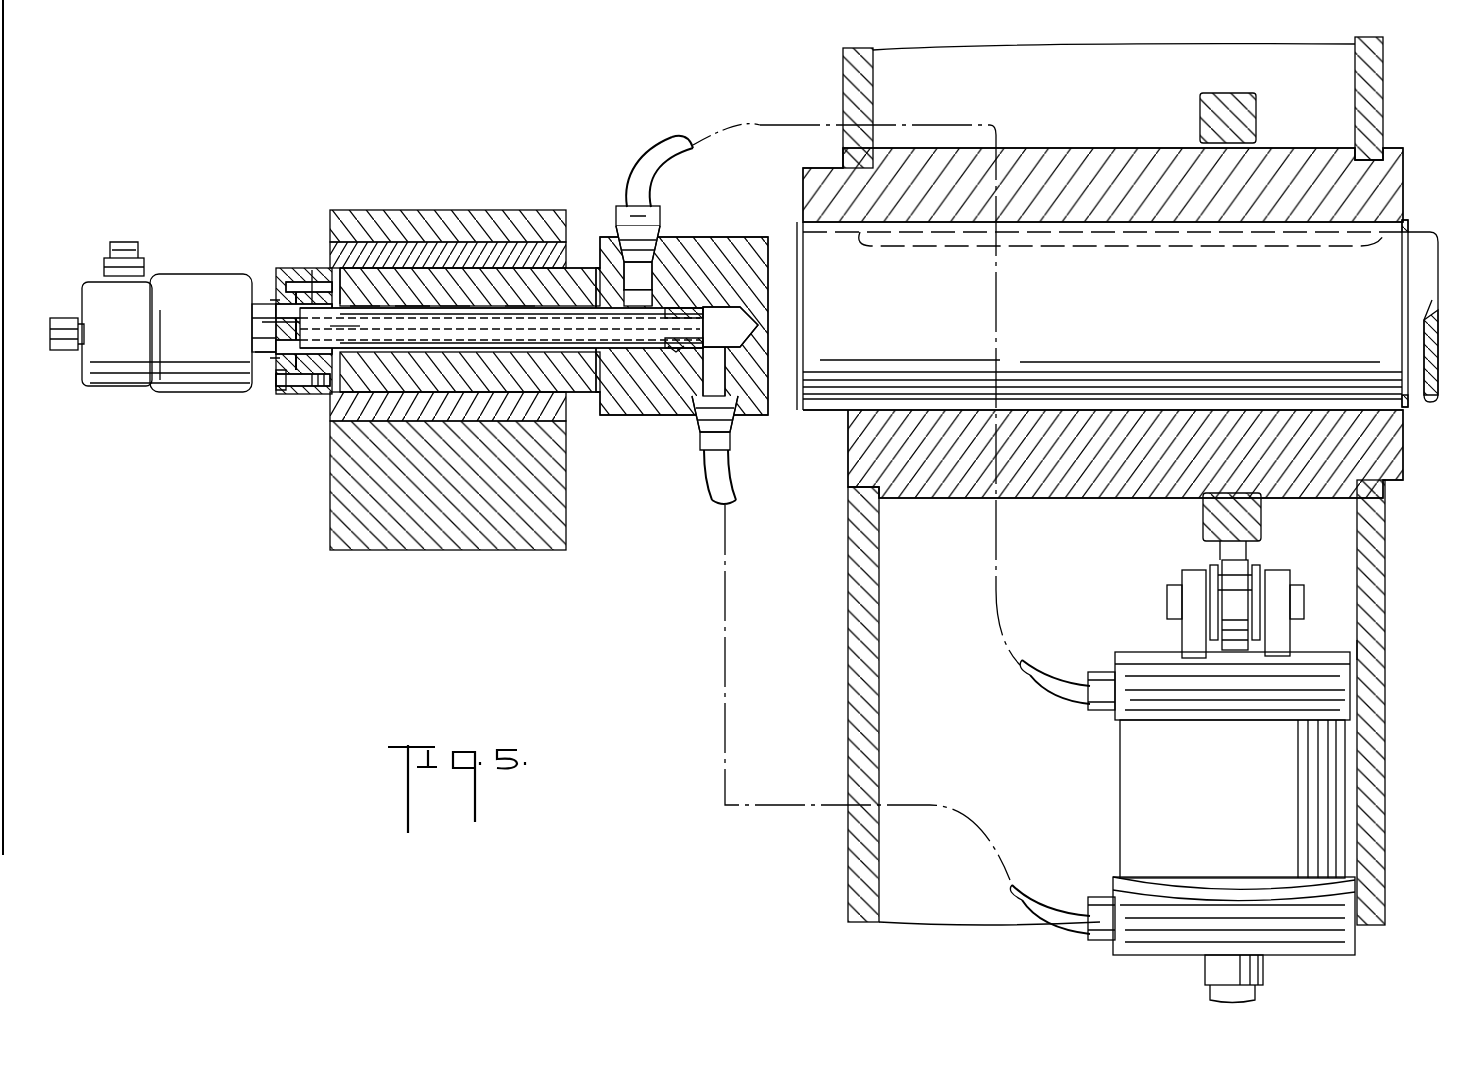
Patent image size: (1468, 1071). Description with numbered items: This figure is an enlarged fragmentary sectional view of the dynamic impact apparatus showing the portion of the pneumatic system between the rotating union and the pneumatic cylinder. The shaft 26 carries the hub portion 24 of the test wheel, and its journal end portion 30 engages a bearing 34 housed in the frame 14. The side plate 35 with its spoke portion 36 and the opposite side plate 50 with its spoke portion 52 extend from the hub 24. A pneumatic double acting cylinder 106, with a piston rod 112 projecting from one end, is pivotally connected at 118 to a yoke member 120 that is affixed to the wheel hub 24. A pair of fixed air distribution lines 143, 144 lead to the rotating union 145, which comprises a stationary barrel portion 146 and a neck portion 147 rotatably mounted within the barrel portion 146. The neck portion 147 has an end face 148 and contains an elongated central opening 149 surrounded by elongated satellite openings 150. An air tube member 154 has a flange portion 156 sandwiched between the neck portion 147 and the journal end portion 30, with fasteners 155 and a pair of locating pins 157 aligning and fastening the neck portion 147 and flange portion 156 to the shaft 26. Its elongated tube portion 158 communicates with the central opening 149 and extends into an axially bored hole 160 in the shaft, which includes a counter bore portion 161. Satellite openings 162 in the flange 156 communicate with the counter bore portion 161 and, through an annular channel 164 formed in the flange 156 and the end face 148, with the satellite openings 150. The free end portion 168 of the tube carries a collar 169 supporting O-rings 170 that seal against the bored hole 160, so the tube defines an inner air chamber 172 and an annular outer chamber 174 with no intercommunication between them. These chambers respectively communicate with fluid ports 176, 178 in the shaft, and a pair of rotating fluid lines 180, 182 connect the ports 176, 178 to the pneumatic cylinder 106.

The frame 14 is at (330, 440).
The hub portion 24 is at (1398, 462).
The shaft 26 is at (1422, 242).
The journal end portion 30 is at (497, 275).
The bearing 34 is at (436, 240).
The side plate 35 is at (1381, 582).
The spoke portion 36 is at (1381, 648).
The opposite side plate 50 is at (850, 590).
The spoke portion 52 is at (848, 553).
The pneumatic double acting cylinder 106 is at (1122, 777).
The piston rod 112 is at (1258, 995).
The pivotal connection 118 is at (1170, 595).
The yoke member 120 is at (1215, 523).
The fixed air distribution line 143 is at (48, 352).
The fixed air distribution line 144 is at (128, 248).
The rotating union 145 is at (185, 402).
The stationary barrel portion 146 is at (228, 341).
The neck portion 147 is at (262, 352).
The end face 148 is at (300, 270).
The elongated central opening 149 is at (272, 322).
The elongated satellite openings 150 is at (275, 300).
The air tube member 154 is at (397, 305).
The fasteners 155 is at (280, 388).
The flange portion 156 is at (316, 270).
The locating pins 157 is at (343, 268).
The elongated tube portion 158 is at (451, 318).
The axially bored hole 160 is at (517, 316).
The counter bore portion 161 is at (366, 318).
The satellite openings 162 is at (299, 268).
The annular channel 164 is at (333, 330).
The free end portion 168 is at (710, 306).
The collar 169 is at (676, 310).
The O-rings 170 is at (676, 352).
The inner air chamber 172 is at (612, 348).
The annular outer chamber 174 is at (576, 347).
The fluid port 176 is at (700, 392).
The fluid port 178 is at (632, 288).
The rotating fluid line 180 is at (704, 482).
The rotating fluid line 182 is at (676, 146).